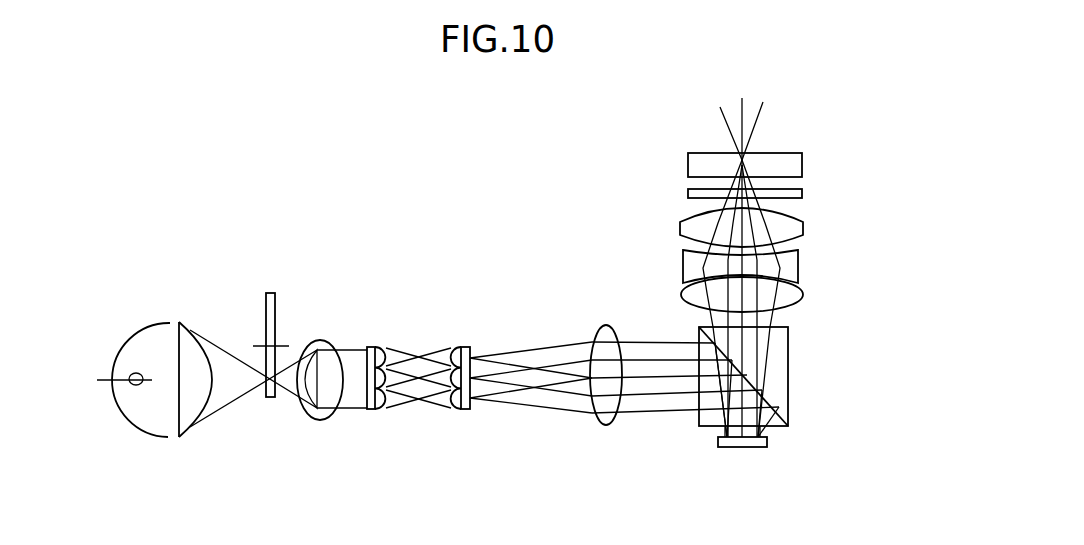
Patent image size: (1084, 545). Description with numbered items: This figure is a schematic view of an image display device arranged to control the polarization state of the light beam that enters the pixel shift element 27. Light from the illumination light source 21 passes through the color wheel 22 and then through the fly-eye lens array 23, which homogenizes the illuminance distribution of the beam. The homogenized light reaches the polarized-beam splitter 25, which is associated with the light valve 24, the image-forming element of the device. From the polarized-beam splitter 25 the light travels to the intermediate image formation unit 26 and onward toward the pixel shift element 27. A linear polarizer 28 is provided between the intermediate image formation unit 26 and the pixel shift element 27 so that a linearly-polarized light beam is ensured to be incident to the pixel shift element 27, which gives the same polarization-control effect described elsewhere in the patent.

The illumination light source 21 is at (150, 437).
The color wheel 22 is at (272, 397).
The fly-eye lens array 23 is at (472, 425).
The light valve 24 is at (742, 448).
The polarized-beam splitter 25 is at (788, 368).
The intermediate image formation unit 26 is at (820, 213).
The pixel shift element 27 is at (802, 165).
The linear polarizer 28 is at (802, 193).